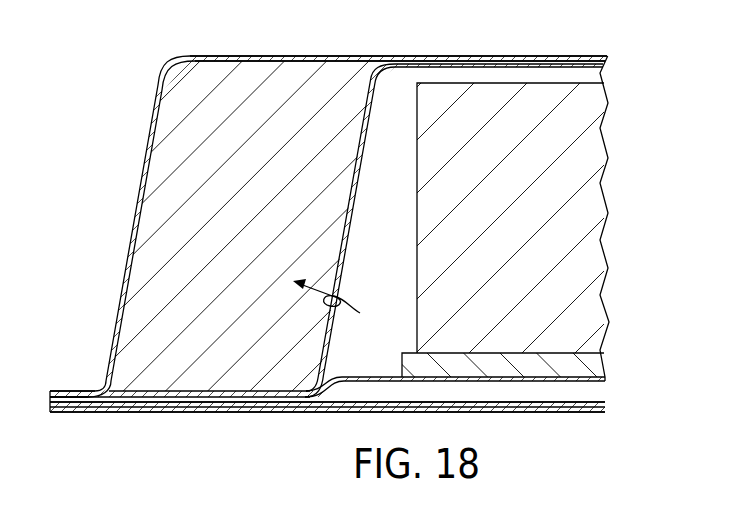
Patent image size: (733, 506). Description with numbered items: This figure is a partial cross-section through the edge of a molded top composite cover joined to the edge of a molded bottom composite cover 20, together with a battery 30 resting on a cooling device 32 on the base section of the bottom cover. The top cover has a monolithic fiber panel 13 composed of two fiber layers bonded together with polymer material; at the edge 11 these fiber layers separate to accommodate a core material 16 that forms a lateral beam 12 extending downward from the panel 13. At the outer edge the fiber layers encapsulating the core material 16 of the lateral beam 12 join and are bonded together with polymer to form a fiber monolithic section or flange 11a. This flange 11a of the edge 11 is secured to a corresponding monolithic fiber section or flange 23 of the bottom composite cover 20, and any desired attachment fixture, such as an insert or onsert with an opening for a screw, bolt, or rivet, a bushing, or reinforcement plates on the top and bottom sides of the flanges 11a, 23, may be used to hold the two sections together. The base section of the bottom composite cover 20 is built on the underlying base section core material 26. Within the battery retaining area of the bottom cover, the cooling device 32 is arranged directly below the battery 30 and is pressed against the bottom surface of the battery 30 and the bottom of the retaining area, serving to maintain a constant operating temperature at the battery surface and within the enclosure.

The edge 11 is at (131, 238).
The fiber monolithic section or flange 11a is at (65, 391).
The lateral beam 12 is at (133, 303).
The monolithic fiber panel 13 is at (563, 56).
The core material 16 is at (342, 306).
The bottom composite cover 20 is at (572, 413).
The monolithic fiber section or flange 23 is at (108, 413).
The base section core material 26 is at (602, 390).
The battery 30 is at (598, 200).
The cooling device 32 is at (600, 362).